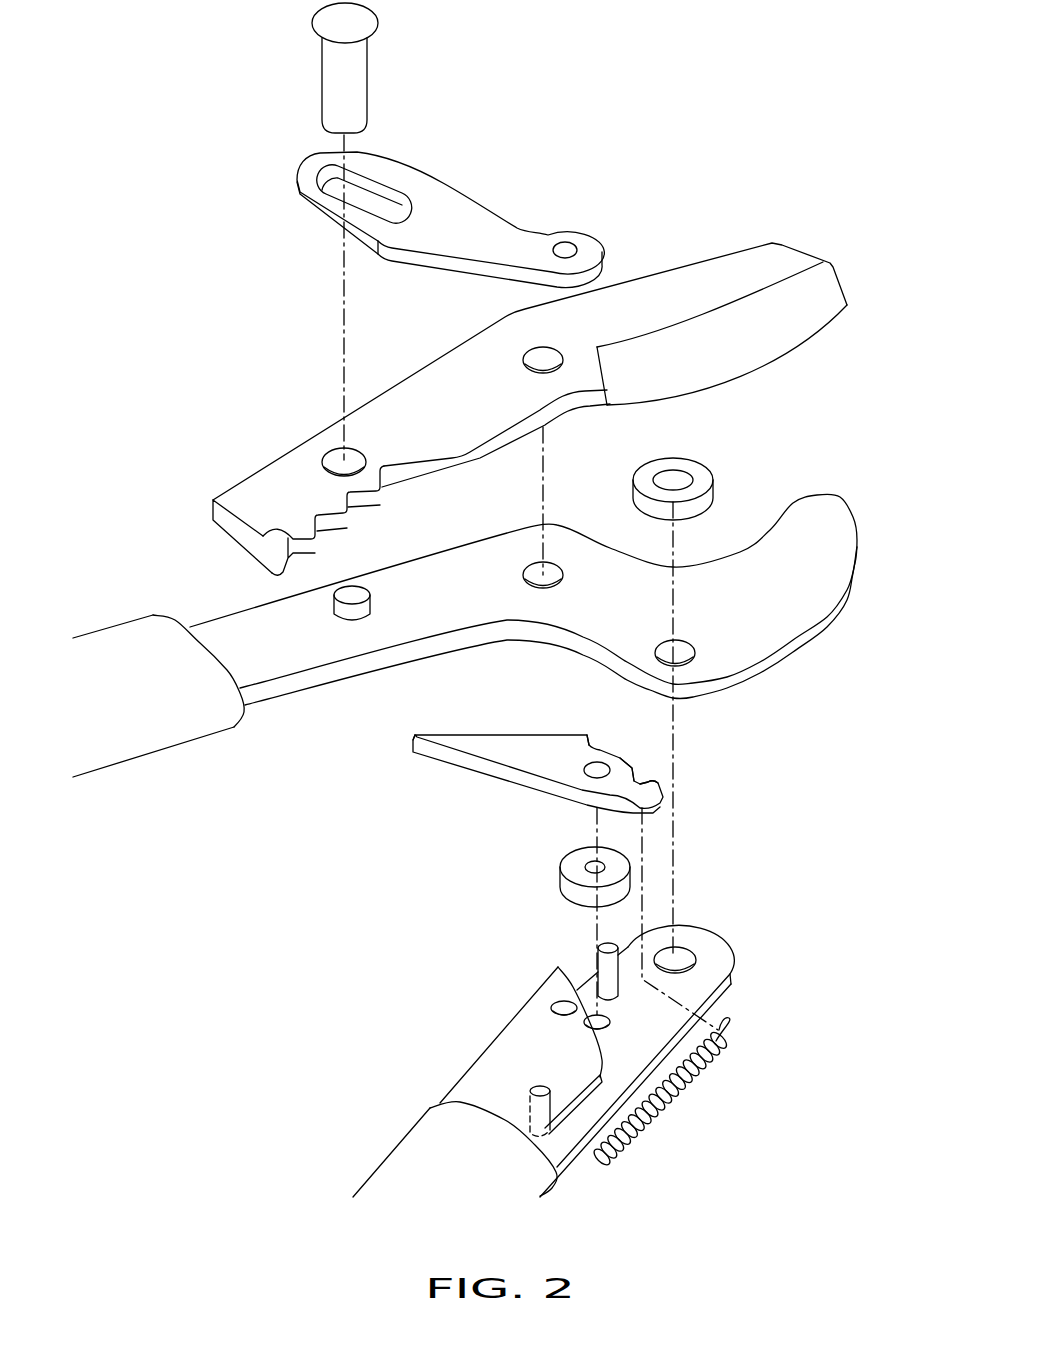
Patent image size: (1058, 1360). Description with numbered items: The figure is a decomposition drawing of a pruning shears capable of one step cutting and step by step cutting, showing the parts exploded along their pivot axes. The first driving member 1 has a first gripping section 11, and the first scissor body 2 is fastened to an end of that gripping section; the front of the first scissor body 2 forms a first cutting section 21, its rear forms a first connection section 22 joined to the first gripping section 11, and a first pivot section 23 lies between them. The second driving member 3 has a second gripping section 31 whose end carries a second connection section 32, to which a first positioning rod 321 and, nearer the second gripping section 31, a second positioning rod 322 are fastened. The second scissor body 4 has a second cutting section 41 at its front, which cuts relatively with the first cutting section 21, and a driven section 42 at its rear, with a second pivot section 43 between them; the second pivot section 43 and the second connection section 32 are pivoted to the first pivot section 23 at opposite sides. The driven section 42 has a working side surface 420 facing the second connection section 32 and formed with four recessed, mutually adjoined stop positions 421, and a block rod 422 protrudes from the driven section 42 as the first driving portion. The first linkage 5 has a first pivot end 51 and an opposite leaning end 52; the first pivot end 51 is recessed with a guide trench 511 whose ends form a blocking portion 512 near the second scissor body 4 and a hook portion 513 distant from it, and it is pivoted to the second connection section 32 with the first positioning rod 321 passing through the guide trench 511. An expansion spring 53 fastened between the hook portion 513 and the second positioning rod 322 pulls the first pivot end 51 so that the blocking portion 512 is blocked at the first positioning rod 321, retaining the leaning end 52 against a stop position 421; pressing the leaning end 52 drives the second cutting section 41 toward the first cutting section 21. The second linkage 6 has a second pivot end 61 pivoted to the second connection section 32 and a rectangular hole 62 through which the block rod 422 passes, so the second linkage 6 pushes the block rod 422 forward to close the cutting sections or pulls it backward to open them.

The first driving member 1 is at (116, 610).
The first gripping section 11 is at (165, 742).
The first scissor body 2 is at (756, 685).
The first cutting section 21 is at (797, 607).
The first connection section 22 is at (303, 663).
The first pivot section 23 is at (503, 623).
The second driving member 3 is at (364, 1154).
The second gripping section 31 is at (413, 1137).
The second connection section 32 is at (520, 1033).
The first positioning rod 321 is at (600, 957).
The second positioning rod 322 is at (527, 1103).
The second scissor body 4 is at (722, 238).
The second cutting section 41 is at (747, 363).
The driven section 42 is at (282, 478).
The second pivot section 43 is at (553, 393).
The working side surface 420 is at (317, 491).
The stop positions 421 is at (287, 532).
The block rod 422 is at (349, 88).
The first linkage 5 is at (550, 913).
The first pivot end 51 is at (648, 758).
The guide trench 511 is at (632, 772).
The blocking portion 512 is at (590, 743).
The hook portion 513 is at (660, 787).
The leaning end 52 is at (417, 737).
The expansion spring 53 is at (687, 1077).
The second linkage 6 is at (437, 210).
The second pivot end 61 is at (577, 238).
The rectangular hole 62 is at (347, 192).